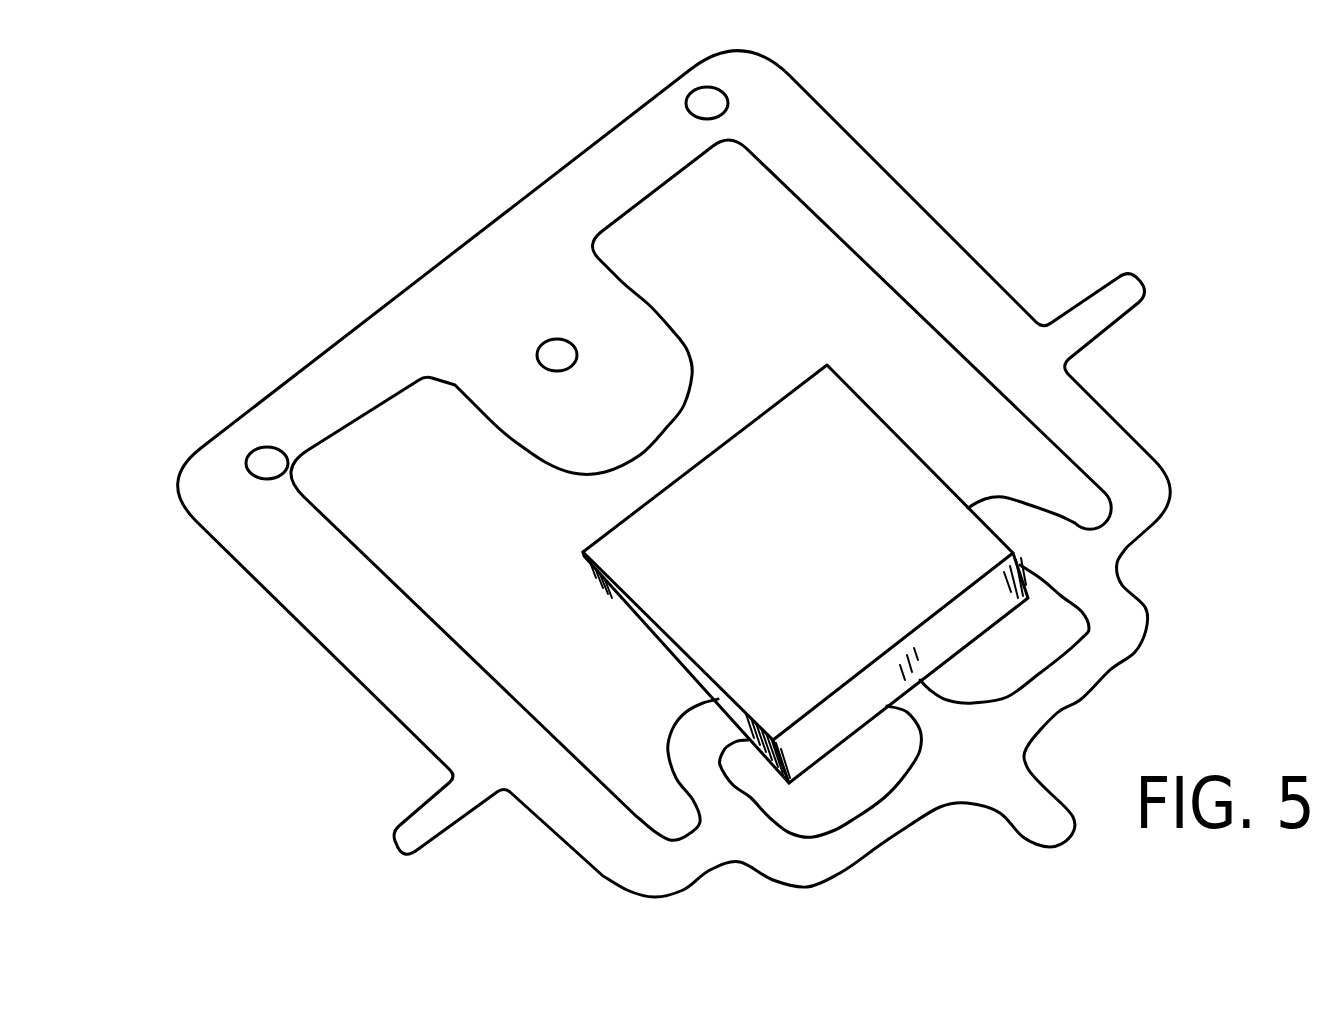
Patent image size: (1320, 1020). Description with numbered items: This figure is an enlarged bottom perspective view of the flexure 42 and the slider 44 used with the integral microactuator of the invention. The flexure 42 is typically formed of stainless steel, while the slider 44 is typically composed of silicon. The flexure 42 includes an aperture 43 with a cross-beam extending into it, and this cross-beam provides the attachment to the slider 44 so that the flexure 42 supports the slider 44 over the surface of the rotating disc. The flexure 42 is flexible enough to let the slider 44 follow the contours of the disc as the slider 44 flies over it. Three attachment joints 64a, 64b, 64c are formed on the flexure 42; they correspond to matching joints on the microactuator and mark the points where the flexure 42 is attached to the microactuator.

The flexure 42 is at (910, 192).
The aperture 43 is at (930, 326).
The slider 44 is at (910, 473).
The attachment joint 64a is at (265, 460).
The attachment joint 64b is at (553, 352).
The attachment joint 64c is at (703, 100).